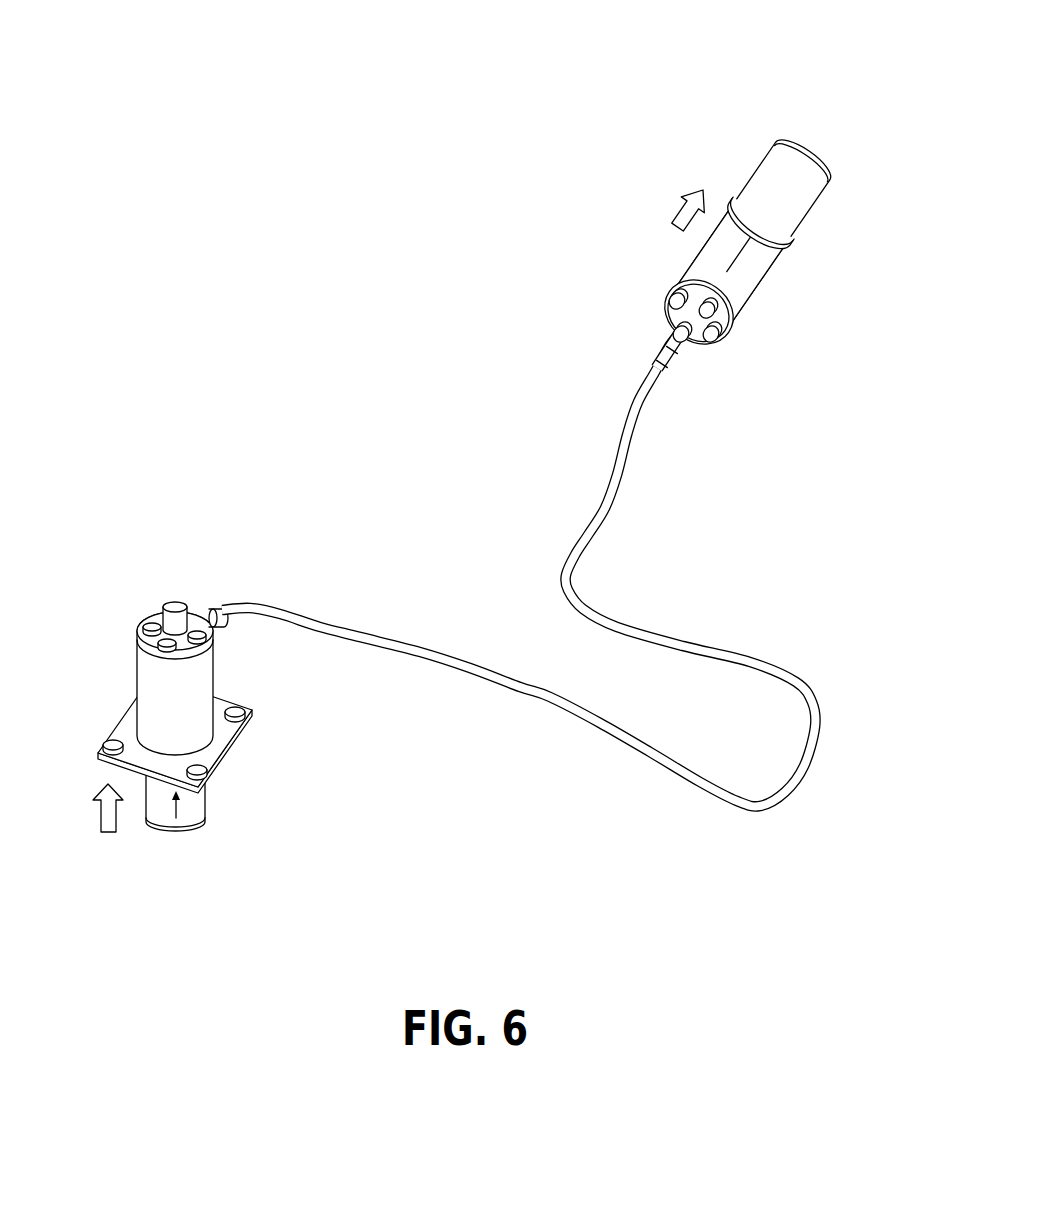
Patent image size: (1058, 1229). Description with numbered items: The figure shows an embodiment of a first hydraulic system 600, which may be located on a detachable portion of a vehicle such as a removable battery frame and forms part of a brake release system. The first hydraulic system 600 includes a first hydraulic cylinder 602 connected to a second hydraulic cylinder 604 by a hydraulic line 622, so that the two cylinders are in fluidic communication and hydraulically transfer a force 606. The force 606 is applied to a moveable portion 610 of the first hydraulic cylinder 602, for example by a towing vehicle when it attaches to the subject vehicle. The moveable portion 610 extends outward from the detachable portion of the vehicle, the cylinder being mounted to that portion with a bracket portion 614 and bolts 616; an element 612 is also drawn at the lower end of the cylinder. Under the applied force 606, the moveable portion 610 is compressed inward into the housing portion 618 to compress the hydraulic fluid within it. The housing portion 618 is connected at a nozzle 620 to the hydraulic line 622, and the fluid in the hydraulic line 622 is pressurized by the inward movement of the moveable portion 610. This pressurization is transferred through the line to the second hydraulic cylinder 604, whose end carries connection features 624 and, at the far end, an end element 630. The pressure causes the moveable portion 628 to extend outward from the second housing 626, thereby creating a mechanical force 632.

The first hydraulic system 600 is at (259, 90).
The first hydraulic cylinder 602 is at (132, 580).
The second hydraulic cylinder 604 is at (700, 135).
The force 606 is at (100, 818).
The moveable portion 610 is at (175, 832).
The inlet cylinder 612 is at (207, 798).
The bracket portion 614 is at (222, 740).
The bolts 616 is at (236, 705).
The housing portion 618 is at (135, 668).
The nozzle 620 is at (209, 609).
The hydraulic line 622 is at (364, 630).
The connector ports 624 is at (663, 313).
The second housing 626 is at (767, 287).
The moveable portion 628 is at (813, 210).
The end cap 630 is at (818, 145).
The mechanical force 632 is at (668, 212).